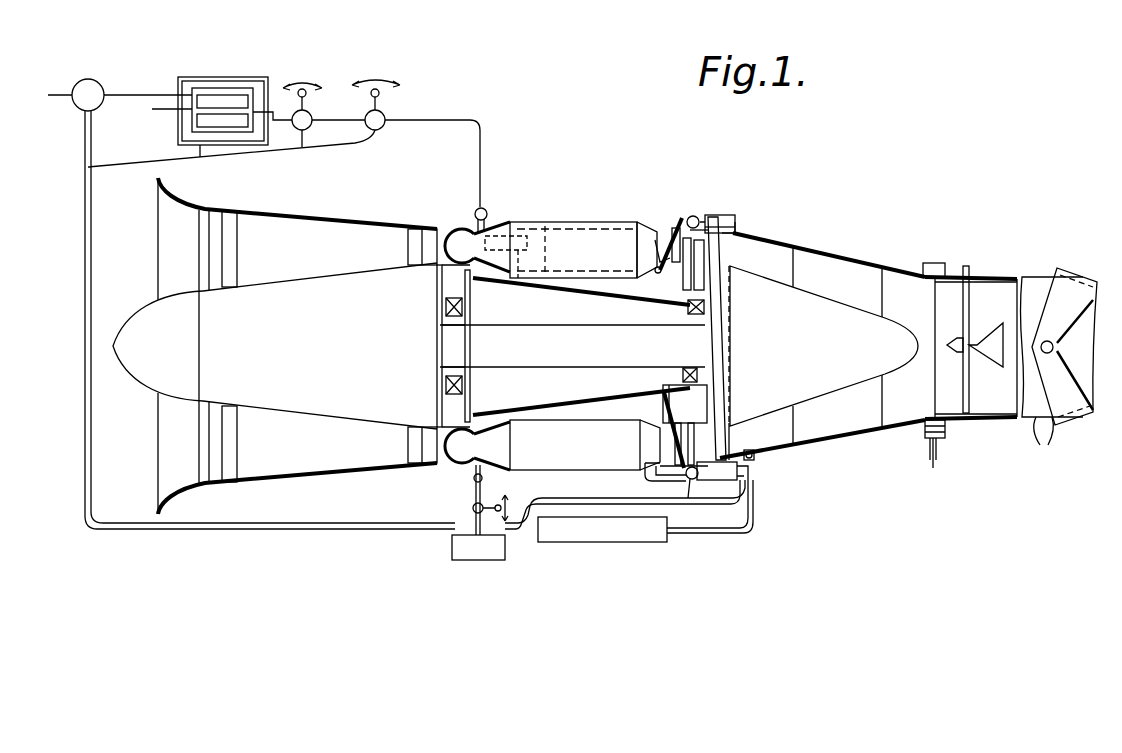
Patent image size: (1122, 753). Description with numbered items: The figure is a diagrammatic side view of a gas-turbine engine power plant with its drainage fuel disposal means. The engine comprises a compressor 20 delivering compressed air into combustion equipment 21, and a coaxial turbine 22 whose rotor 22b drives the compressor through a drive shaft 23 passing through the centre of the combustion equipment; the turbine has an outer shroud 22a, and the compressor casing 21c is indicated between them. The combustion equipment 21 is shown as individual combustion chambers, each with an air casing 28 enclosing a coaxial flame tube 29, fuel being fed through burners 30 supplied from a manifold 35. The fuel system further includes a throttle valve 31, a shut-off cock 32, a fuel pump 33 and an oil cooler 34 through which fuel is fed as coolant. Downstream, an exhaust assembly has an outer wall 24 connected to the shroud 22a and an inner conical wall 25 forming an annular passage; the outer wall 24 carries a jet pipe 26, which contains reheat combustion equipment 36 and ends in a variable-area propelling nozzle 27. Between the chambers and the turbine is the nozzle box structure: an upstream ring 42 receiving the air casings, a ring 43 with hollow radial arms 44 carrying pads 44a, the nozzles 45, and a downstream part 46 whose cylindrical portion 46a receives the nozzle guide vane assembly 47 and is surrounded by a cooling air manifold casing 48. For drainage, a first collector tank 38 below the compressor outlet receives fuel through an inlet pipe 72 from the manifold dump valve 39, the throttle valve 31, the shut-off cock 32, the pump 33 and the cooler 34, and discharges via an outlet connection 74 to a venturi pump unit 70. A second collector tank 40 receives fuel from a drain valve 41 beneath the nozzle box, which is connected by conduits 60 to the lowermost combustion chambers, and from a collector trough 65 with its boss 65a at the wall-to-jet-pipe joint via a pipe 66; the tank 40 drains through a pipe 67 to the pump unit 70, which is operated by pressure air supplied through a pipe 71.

The compressor 20 is at (322, 212).
The combustion equipment 21 is at (577, 230).
The compressor casing 21c is at (563, 440).
The turbine 22 is at (717, 312).
The outer shroud 22a is at (734, 226).
The rotor 22b is at (733, 318).
The drive shaft 23 is at (515, 362).
The outer wall 24 is at (838, 258).
The inner conical wall 25 is at (866, 310).
The jet pipe 26 is at (1042, 446).
The propelling nozzle 27 is at (1068, 275).
The air casing 28 is at (602, 222).
The flame tube 29 is at (545, 232).
The burners 30 is at (518, 272).
The throttle valve 31 is at (309, 112).
The shut-off cock 32 is at (383, 112).
The fuel pump 33 is at (98, 81).
The oil cooler 34 is at (218, 77).
The manifold 35 is at (487, 208).
The reheat combustion equipment 36 is at (970, 312).
The first drainage fuel collector tank 38 is at (486, 560).
The manifold dump valve 39 is at (472, 508).
The second drainage fuel collector tank 40 is at (682, 500).
The drain valve 41 is at (700, 478).
The upstream part 42 is at (670, 240).
The ring 43 is at (683, 272).
The radial arms 44 is at (697, 272).
The pads 44a is at (662, 262).
The nozzles 45 is at (657, 273).
The downstream part 46 is at (692, 214).
The downstream portion 46a is at (714, 215).
The nozzle guide vane assembly 47 is at (700, 258).
The cylindrical casing 48 is at (737, 234).
The conduits 60 is at (654, 481).
The collector trough 65 is at (951, 461).
The igniter boss 65a is at (946, 432).
The pipe 66 is at (930, 456).
The pipe 67 is at (756, 531).
The venturi pump unit 70 is at (756, 456).
The pipe 71 is at (748, 496).
The drain fuel inlet pipe 72 is at (342, 532).
The outlet connection 74 is at (565, 543).